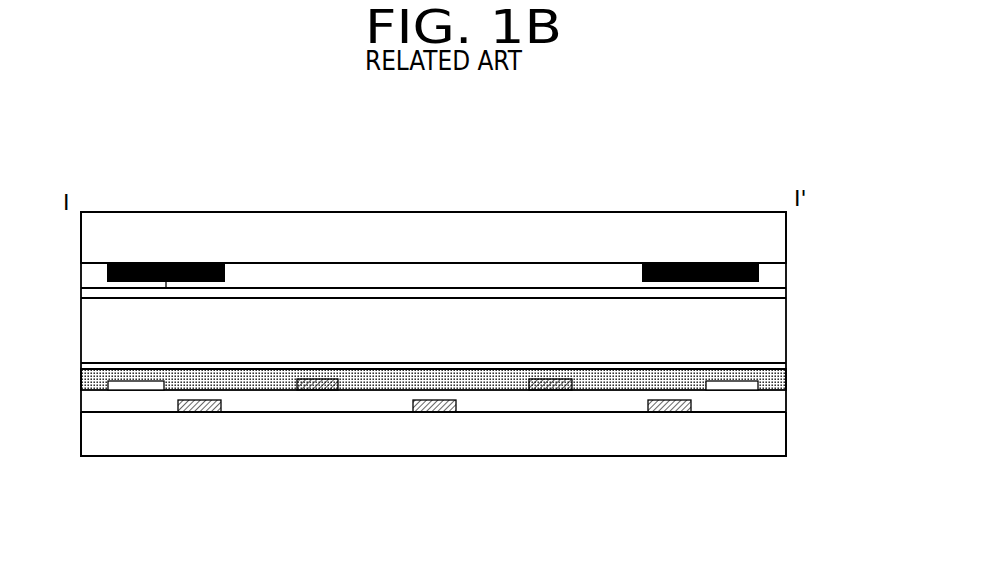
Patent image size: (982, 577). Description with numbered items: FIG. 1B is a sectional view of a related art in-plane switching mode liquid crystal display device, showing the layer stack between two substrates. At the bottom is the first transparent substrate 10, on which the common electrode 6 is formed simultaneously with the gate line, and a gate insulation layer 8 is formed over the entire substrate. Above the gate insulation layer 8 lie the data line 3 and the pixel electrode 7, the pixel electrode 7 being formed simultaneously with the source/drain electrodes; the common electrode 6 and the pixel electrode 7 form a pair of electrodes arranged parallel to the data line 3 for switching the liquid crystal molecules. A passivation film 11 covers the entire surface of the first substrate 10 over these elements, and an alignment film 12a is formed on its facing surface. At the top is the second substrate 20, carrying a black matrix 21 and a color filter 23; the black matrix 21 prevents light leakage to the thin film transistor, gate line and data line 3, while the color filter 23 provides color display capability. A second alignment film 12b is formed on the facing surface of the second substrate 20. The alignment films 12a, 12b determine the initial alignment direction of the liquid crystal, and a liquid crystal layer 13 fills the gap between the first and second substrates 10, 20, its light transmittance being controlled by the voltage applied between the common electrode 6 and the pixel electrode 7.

The second substrate 20 is at (778, 232).
The color filter 23 is at (495, 273).
The black matrix 21 is at (703, 288).
The alignment film 12b is at (778, 290).
The liquid crystal layer 13 is at (778, 332).
The alignment film 12a is at (778, 358).
The passivation film 11 is at (778, 380).
The data line 3 is at (134, 387).
The pixel electrode 7 is at (317, 390).
The gate insulation layer 8 is at (778, 402).
The common electrode 6 is at (200, 412).
The first transparent substrate 10 is at (778, 434).